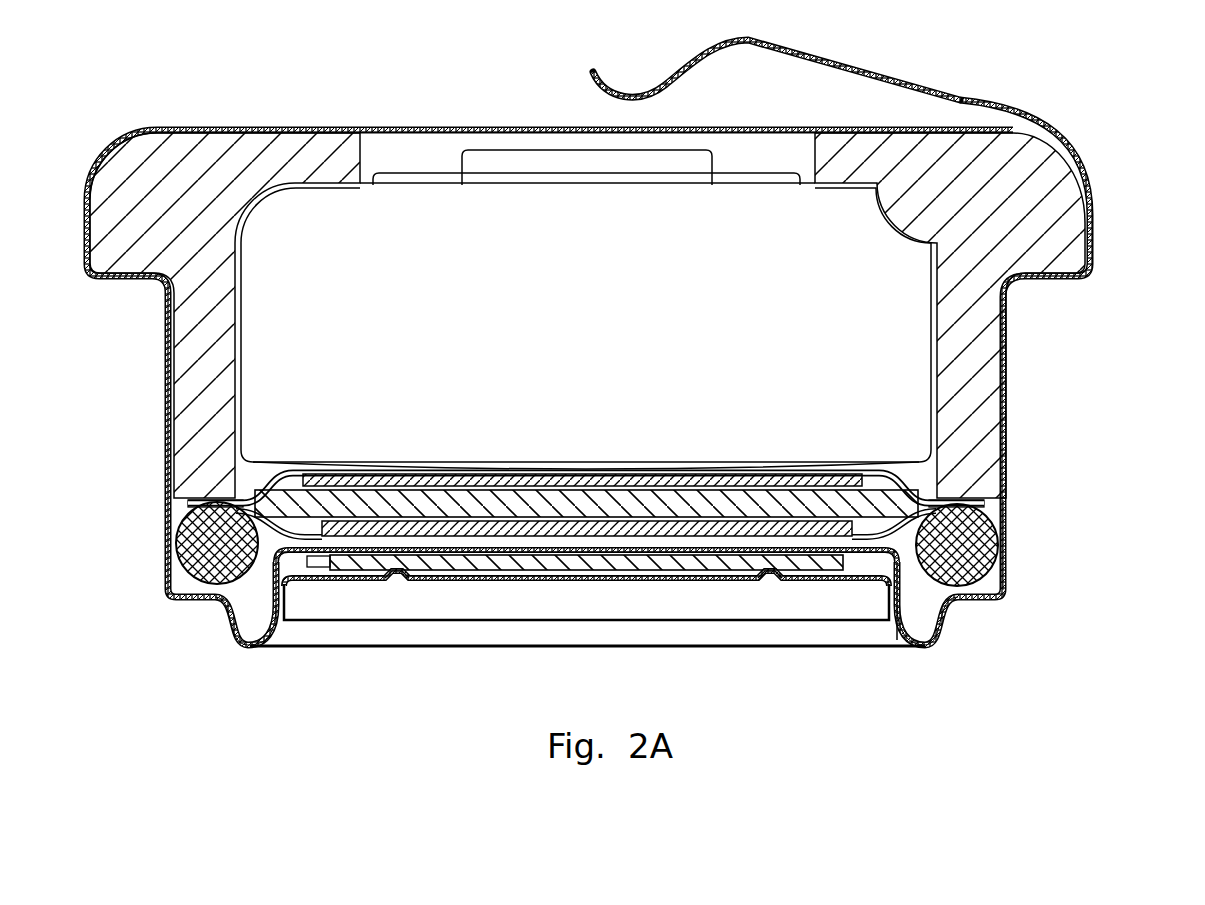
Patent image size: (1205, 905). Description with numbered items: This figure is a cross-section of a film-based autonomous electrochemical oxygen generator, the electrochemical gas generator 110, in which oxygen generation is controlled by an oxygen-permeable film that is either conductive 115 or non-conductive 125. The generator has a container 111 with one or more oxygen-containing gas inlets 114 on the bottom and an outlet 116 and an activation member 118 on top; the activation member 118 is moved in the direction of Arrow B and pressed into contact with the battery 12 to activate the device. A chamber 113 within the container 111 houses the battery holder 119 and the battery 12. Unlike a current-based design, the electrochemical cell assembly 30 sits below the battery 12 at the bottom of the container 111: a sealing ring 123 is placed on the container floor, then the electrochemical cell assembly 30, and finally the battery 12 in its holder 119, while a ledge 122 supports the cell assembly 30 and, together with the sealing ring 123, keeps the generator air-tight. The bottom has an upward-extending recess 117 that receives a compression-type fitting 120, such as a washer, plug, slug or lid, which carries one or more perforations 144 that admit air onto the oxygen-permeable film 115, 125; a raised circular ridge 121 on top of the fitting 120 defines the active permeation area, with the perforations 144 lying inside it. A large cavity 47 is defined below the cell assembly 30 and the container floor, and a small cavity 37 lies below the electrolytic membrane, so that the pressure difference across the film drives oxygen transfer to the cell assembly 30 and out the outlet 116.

The electrochemical gas generator 110 is at (348, 90).
The container 111 is at (1094, 250).
The battery 12 is at (607, 334).
The chamber 113 is at (934, 347).
The battery holder 119 is at (227, 162).
The outlet 116 is at (563, 128).
The activation member 118 is at (868, 47).
The Arrow B is at (740, 72).
The oxygen-containing gas inlet 114 is at (590, 552).
The ledge 122 is at (206, 488).
The sealing ring 123 is at (196, 501).
The large cavity 47 is at (205, 542).
The small cavity 37 is at (219, 592).
The recess 117 is at (288, 562).
The compression-type fitting 120 is at (347, 583).
The raised circular ridge 121 is at (400, 581).
The perforation 144 is at (593, 582).
The conductive oxygen-permeable film 115 is at (950, 576).
The non-conductive oxygen-permeable film 125 is at (950, 576).
The electrochemical cell assembly 30 is at (1003, 517).